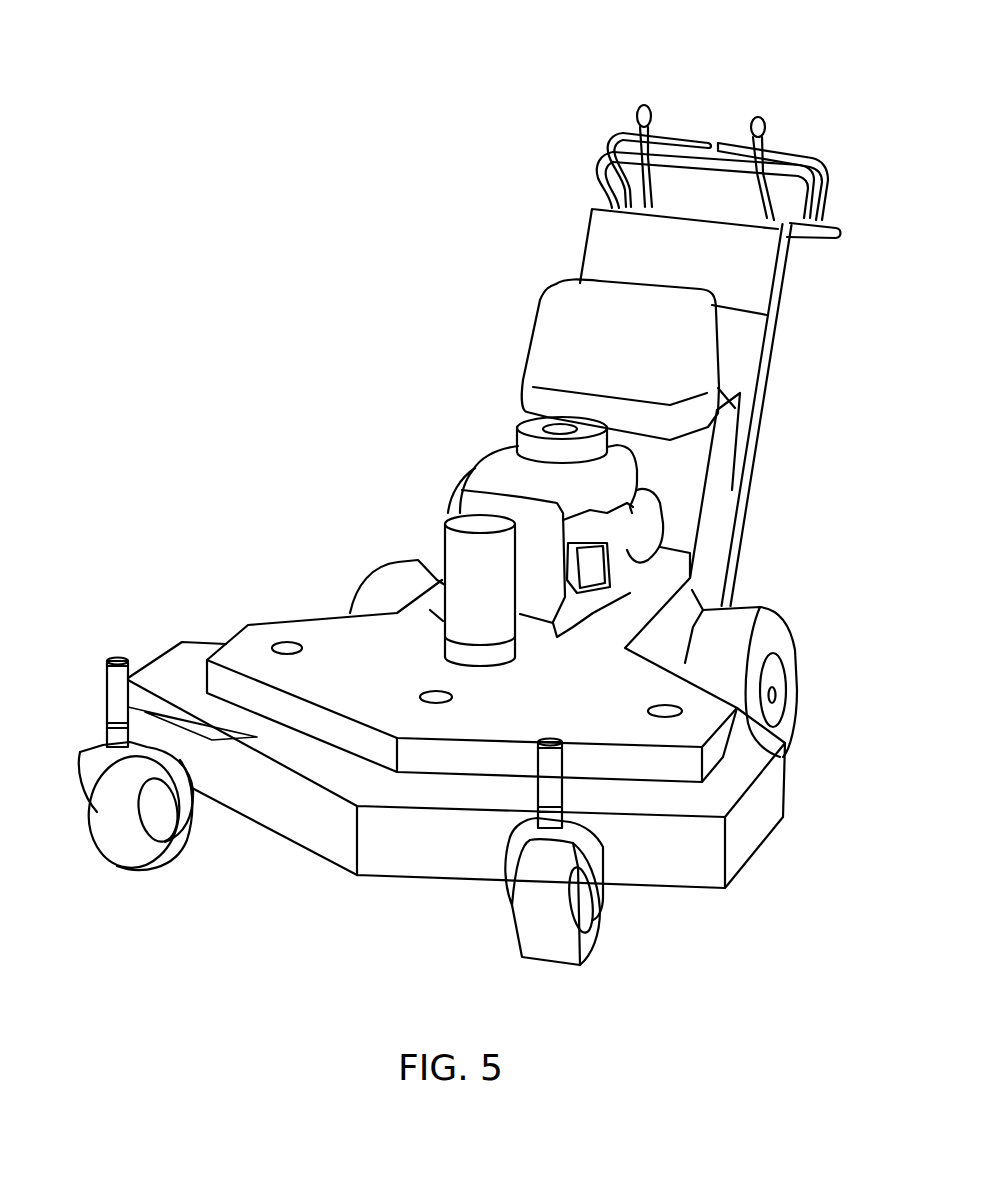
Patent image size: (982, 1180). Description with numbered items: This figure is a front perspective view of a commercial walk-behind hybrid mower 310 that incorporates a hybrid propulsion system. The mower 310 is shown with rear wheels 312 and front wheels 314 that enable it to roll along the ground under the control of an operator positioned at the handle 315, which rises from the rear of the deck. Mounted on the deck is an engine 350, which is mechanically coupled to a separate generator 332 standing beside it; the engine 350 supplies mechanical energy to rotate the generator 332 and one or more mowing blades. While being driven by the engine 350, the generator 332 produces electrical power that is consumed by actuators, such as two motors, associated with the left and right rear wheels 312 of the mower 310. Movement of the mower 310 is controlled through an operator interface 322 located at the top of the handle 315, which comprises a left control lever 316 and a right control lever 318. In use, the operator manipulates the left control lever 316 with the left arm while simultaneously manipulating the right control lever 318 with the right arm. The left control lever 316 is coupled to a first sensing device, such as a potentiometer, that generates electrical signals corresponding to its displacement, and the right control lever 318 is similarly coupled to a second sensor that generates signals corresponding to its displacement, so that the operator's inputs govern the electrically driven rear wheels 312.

The commercial walk-behind hybrid mower 310 is at (293, 208).
The rear wheel 312 is at (763, 610).
The front wheels 314 is at (170, 868).
The handle 315 is at (777, 338).
The left control lever 316 is at (780, 146).
The right control lever 318 is at (682, 140).
The operator interface 322 is at (608, 118).
The generator 332 is at (500, 590).
The engine 350 is at (450, 398).